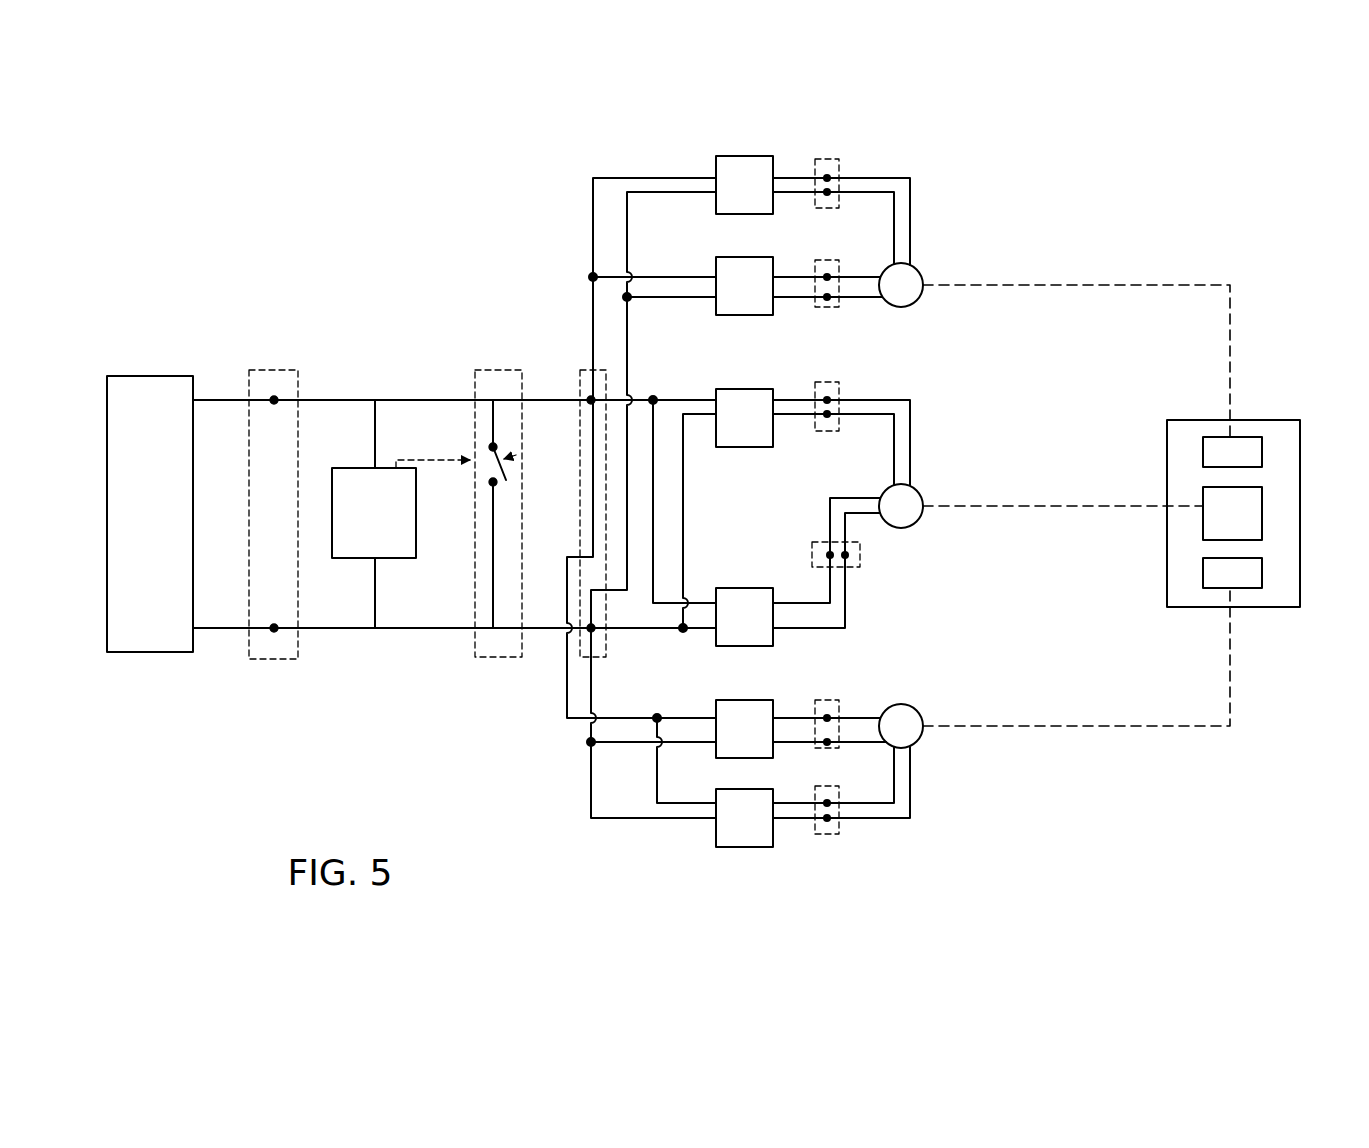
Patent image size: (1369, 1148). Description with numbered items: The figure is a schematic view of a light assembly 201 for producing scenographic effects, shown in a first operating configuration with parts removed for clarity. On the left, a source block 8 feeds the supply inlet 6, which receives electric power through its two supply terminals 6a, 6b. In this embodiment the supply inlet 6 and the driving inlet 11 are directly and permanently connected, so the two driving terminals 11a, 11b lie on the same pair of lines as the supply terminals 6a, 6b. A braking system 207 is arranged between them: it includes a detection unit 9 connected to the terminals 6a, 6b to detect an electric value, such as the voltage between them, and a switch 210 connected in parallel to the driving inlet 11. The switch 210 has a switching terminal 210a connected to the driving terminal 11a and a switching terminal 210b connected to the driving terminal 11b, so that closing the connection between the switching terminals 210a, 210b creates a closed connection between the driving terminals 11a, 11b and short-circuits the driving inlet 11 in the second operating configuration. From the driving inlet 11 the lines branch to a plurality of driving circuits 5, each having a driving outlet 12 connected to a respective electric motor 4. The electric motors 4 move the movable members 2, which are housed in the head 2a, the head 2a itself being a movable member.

The movable members 2 is at (1245, 452).
The head 2a is at (1292, 590).
The electric motors 4 is at (915, 294).
The driving circuits 5 is at (745, 160).
The supply inlet 6 is at (274, 364).
The supply terminal 6a is at (278, 398).
The supply terminal 6b is at (274, 633).
The energy store 8 is at (104, 514).
The detection unit 9 is at (355, 476).
The driving inlet 11 is at (606, 660).
The driving terminal 11a is at (588, 397).
The driving terminal 11b is at (593, 630).
The driving outlet 12 is at (828, 157).
The light assembly 201 is at (148, 726).
The braking system 207 is at (403, 670).
The switch 210 is at (500, 366).
The switching terminal 210a is at (489, 444).
The switching terminal 210b is at (490, 483).